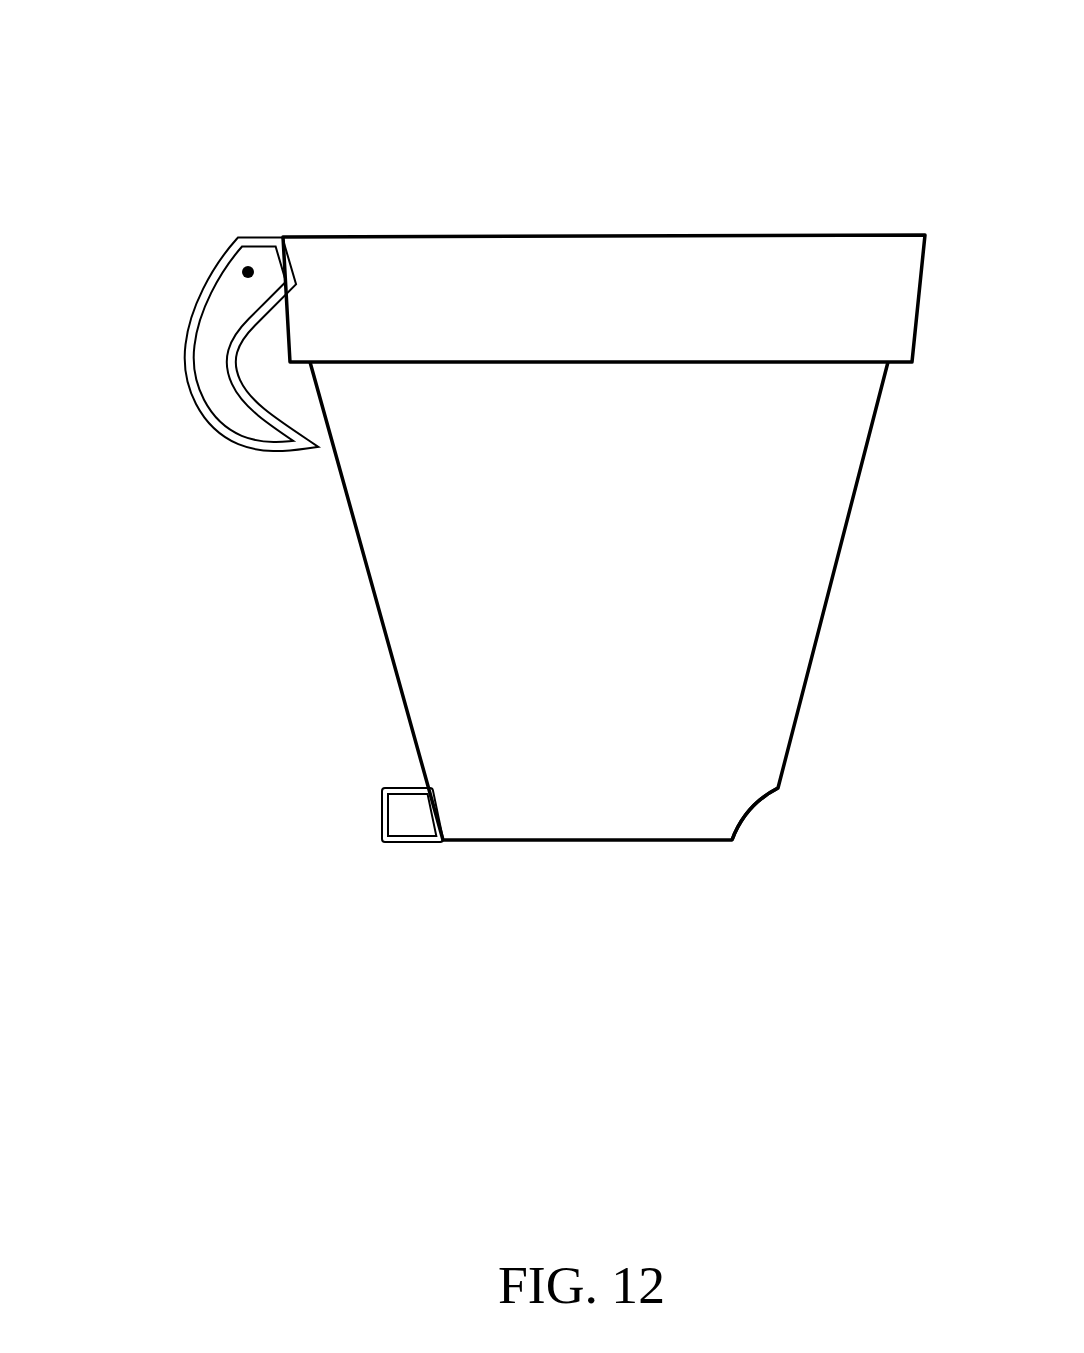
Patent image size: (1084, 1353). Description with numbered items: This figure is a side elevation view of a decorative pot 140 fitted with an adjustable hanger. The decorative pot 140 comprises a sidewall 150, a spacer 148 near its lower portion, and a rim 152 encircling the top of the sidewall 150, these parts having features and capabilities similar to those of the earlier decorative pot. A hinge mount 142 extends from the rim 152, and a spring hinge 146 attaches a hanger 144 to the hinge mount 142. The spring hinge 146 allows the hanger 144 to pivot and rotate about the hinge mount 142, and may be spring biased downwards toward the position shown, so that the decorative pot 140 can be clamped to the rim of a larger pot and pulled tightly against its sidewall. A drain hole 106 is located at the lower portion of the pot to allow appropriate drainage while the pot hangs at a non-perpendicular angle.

The decorative pot 140 is at (497, 516).
The hinge mount 142 is at (267, 233).
The hanger 144 is at (225, 356).
The spring hinge 146 is at (246, 272).
The spacer 148 is at (410, 843).
The sidewall 150 is at (512, 642).
The rim 152 is at (508, 298).
The drain hole 106 is at (752, 800).